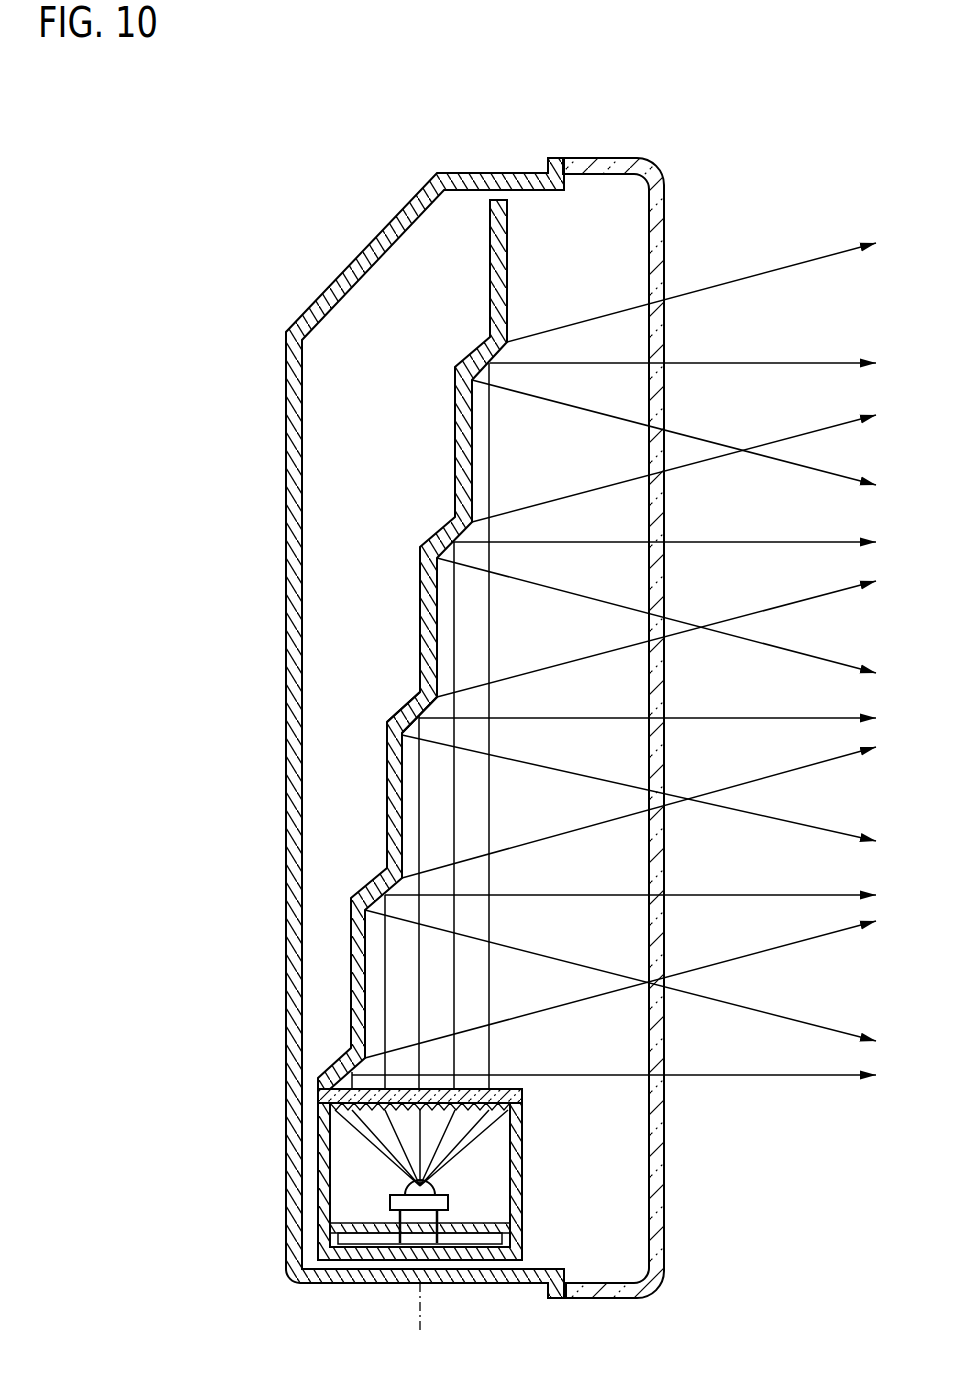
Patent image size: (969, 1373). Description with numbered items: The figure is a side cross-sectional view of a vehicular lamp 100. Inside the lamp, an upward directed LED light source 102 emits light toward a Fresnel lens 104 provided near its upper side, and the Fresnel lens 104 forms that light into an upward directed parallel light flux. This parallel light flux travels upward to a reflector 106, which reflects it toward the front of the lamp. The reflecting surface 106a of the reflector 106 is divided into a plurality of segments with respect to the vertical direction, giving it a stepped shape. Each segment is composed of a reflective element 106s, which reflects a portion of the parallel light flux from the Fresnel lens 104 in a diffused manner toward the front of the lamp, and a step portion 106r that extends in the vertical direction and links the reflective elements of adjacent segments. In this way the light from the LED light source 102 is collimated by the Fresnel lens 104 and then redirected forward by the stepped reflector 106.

The vehicular lamp 100 is at (330, 198).
The LED light source 102 is at (416, 1188).
The Fresnel lens 104 is at (510, 1089).
The reflector 106 is at (417, 642).
The reflecting surface 106a is at (475, 462).
The step portion 106r is at (437, 598).
The reflective element 106s is at (424, 714).